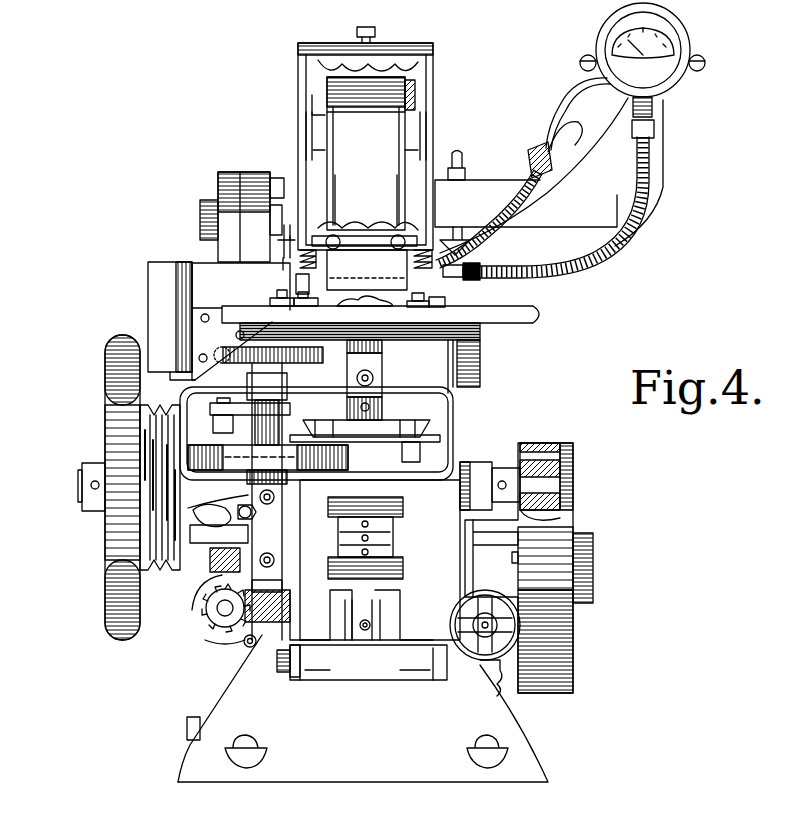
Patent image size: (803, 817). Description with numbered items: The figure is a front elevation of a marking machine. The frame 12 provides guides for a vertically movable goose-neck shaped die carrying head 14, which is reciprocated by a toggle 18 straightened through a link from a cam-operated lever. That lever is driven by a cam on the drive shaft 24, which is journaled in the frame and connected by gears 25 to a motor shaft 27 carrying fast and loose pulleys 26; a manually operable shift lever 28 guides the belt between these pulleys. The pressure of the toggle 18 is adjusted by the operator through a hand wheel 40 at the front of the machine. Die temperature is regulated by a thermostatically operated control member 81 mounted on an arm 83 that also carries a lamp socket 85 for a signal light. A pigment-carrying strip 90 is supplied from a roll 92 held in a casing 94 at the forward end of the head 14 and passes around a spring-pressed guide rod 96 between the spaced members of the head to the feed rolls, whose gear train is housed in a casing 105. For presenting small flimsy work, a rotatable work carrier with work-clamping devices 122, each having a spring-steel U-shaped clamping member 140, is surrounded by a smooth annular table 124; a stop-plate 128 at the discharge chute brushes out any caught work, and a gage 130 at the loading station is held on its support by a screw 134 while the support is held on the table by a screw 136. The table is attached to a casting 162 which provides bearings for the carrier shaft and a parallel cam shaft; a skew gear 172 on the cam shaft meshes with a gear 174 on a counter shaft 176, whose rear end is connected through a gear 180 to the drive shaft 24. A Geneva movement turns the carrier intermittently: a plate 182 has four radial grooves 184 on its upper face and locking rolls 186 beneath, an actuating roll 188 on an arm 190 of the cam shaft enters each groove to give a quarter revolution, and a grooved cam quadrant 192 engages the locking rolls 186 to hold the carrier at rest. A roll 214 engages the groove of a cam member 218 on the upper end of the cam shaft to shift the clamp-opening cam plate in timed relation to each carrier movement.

The frame 12 is at (532, 745).
The die carrying head 14 is at (292, 248).
The toggle 18 is at (350, 625).
The drive shaft 24 is at (520, 562).
The gears 25 is at (560, 525).
The fast and loose pulleys 26 is at (158, 500).
The motor shaft 27 is at (80, 484).
The shift lever 28 is at (178, 560).
The hand wheel 40 is at (522, 638).
The thermostatically operated control member 81 is at (690, 48).
The arm 83 is at (483, 180).
The lamp socket 85 is at (566, 140).
The pigment-carrying strip 90 is at (330, 185).
The roll 92 is at (380, 102).
The casing 94 is at (305, 58).
The spring-pressed guide rod 96 is at (482, 262).
The casing 105 is at (240, 182).
The work-clamping devices 122 is at (383, 312).
The annular table 124 is at (540, 316).
The stop-plate 128 is at (160, 292).
The gage 130 is at (241, 321).
The screw 134 is at (292, 283).
The screw 136 is at (275, 292).
The U-shaped clamping member 140 is at (465, 306).
The casting 162 is at (480, 490).
The skew gear 172 is at (263, 623).
The gear 174 is at (258, 608).
The counter shaft 176 is at (226, 608).
The gear 180 is at (212, 565).
The plate 182 is at (432, 440).
The radial grooves 184 is at (420, 420).
The locking rolls 186 is at (422, 458).
The actuating roll 188 is at (213, 426).
The arm 190 is at (216, 406).
The grooved cam quadrant 192 is at (190, 456).
The roll 214 is at (340, 380).
The cam member 218 is at (232, 351).